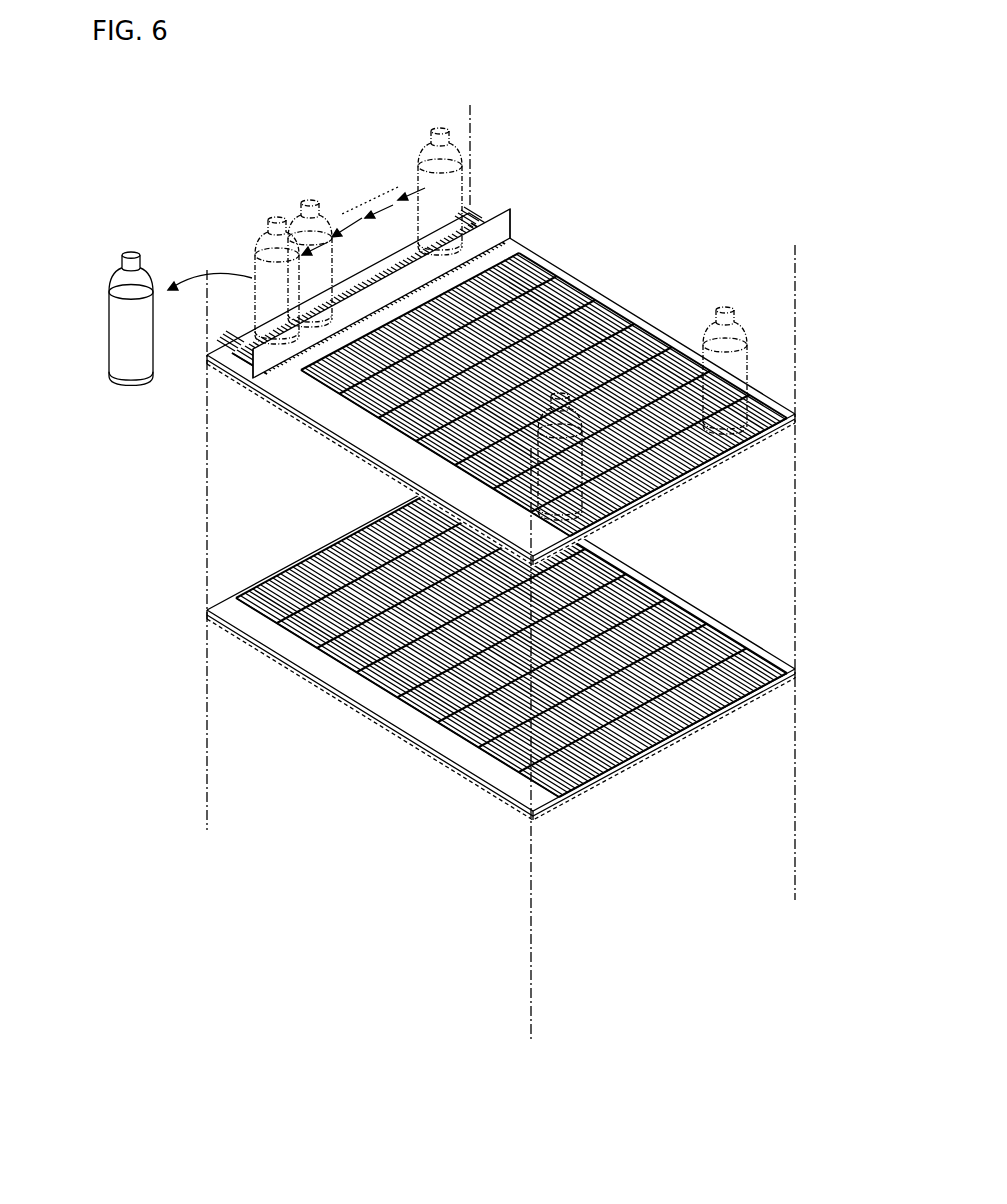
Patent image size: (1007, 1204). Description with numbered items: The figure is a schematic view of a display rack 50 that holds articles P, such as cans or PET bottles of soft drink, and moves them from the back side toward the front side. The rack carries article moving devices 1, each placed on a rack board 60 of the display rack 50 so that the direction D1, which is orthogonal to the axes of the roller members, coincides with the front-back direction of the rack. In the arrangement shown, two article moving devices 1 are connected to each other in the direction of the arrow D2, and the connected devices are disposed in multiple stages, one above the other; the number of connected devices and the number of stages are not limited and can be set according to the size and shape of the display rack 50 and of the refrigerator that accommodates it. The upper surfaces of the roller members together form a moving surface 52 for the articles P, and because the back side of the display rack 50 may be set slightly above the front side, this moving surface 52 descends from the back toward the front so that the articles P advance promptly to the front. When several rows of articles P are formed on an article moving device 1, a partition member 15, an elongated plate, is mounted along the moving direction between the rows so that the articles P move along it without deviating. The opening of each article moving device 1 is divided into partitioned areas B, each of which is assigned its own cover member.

The article moving device 1 is at (520, 264).
The partition member 15 is at (510, 215).
The display rack 50 is at (250, 160).
The moving surface 52 is at (365, 392).
The rack board 60 is at (501, 543).
The partitioned area B is at (706, 260).
The article P is at (262, 237).
The direction D1 is at (290, 895).
The direction D2 is at (290, 895).